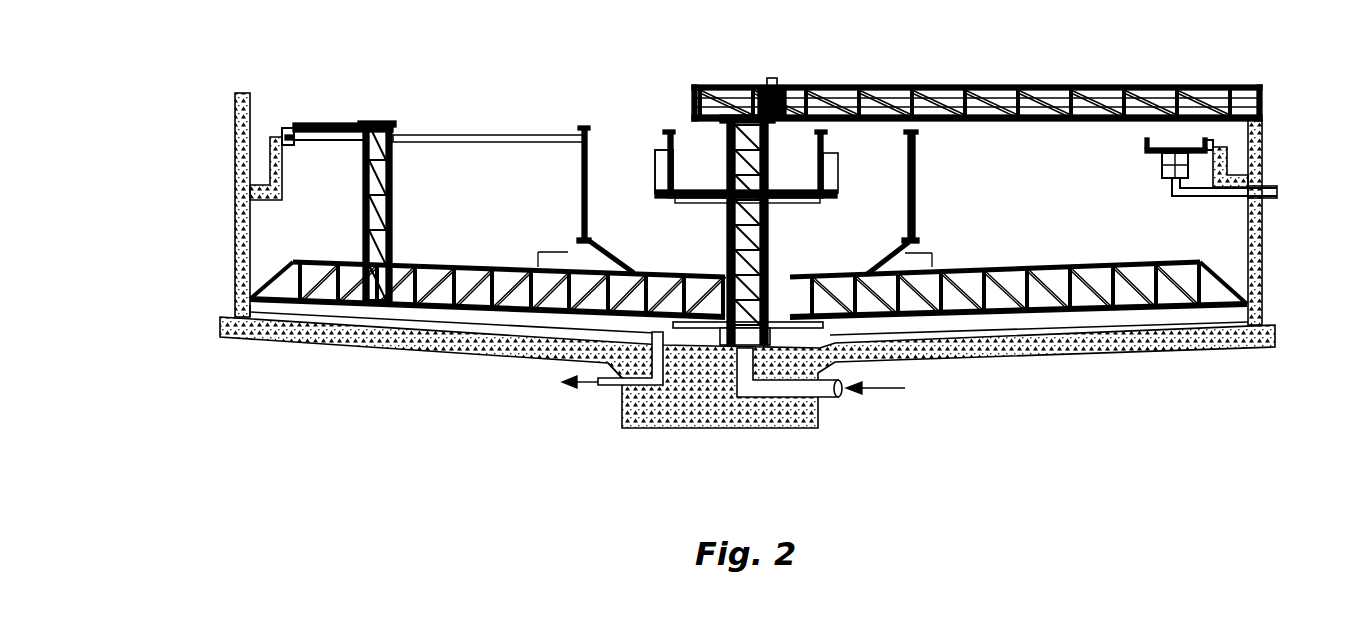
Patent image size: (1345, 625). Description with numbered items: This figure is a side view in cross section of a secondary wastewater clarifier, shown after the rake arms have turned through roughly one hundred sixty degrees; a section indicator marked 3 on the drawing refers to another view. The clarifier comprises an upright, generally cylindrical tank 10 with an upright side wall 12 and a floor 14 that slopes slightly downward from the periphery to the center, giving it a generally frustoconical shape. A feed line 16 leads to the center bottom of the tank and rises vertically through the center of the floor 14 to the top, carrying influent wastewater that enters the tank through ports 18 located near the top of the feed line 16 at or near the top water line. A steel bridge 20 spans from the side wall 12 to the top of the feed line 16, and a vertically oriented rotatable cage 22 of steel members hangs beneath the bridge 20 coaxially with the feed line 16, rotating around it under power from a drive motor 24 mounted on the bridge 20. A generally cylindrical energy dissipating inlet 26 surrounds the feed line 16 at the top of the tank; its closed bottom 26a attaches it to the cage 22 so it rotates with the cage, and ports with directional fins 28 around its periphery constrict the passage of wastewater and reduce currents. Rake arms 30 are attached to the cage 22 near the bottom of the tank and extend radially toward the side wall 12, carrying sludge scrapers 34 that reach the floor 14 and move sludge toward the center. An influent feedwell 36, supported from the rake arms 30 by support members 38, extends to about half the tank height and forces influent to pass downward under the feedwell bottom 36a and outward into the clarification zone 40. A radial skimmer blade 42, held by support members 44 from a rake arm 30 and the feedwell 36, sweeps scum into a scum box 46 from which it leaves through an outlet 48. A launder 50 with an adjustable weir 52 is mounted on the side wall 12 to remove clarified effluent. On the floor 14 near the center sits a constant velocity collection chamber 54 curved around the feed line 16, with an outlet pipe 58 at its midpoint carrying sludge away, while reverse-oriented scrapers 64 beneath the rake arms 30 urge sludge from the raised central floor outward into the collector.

The tank 10 is at (195, 135).
The side wall 12 is at (1262, 262).
The floor 14 is at (1130, 348).
The feed line 16 is at (725, 240).
The ports 18 is at (792, 200).
The bridge 20 is at (990, 85).
The rotatable cage 22 is at (770, 262).
The drive motor 24 is at (790, 85).
The energy dissipating inlet 26 is at (655, 165).
The closed bottom 26a is at (690, 192).
The ports and directional fins 28 is at (838, 175).
The rake arm 30 is at (438, 262).
The sludge scrapers 34 is at (540, 342).
The influent feedwell 36 is at (915, 190).
The feedwell bottom 36a is at (918, 240).
The support members 38 is at (610, 255).
The clarification zone 40 is at (1120, 254).
The radial skimmer blade 42 is at (336, 123).
The support members 44 is at (393, 180).
The scum box 46 is at (1155, 160).
The outlet 48 is at (1258, 195).
The launder 50 is at (262, 160).
The adjustable weir 52 is at (290, 140).
The constant velocity collection chamber 54 is at (870, 345).
The outlet pipe 58 is at (606, 392).
The scrapers 64 is at (825, 282).
The section line 3 is at (734, 258).